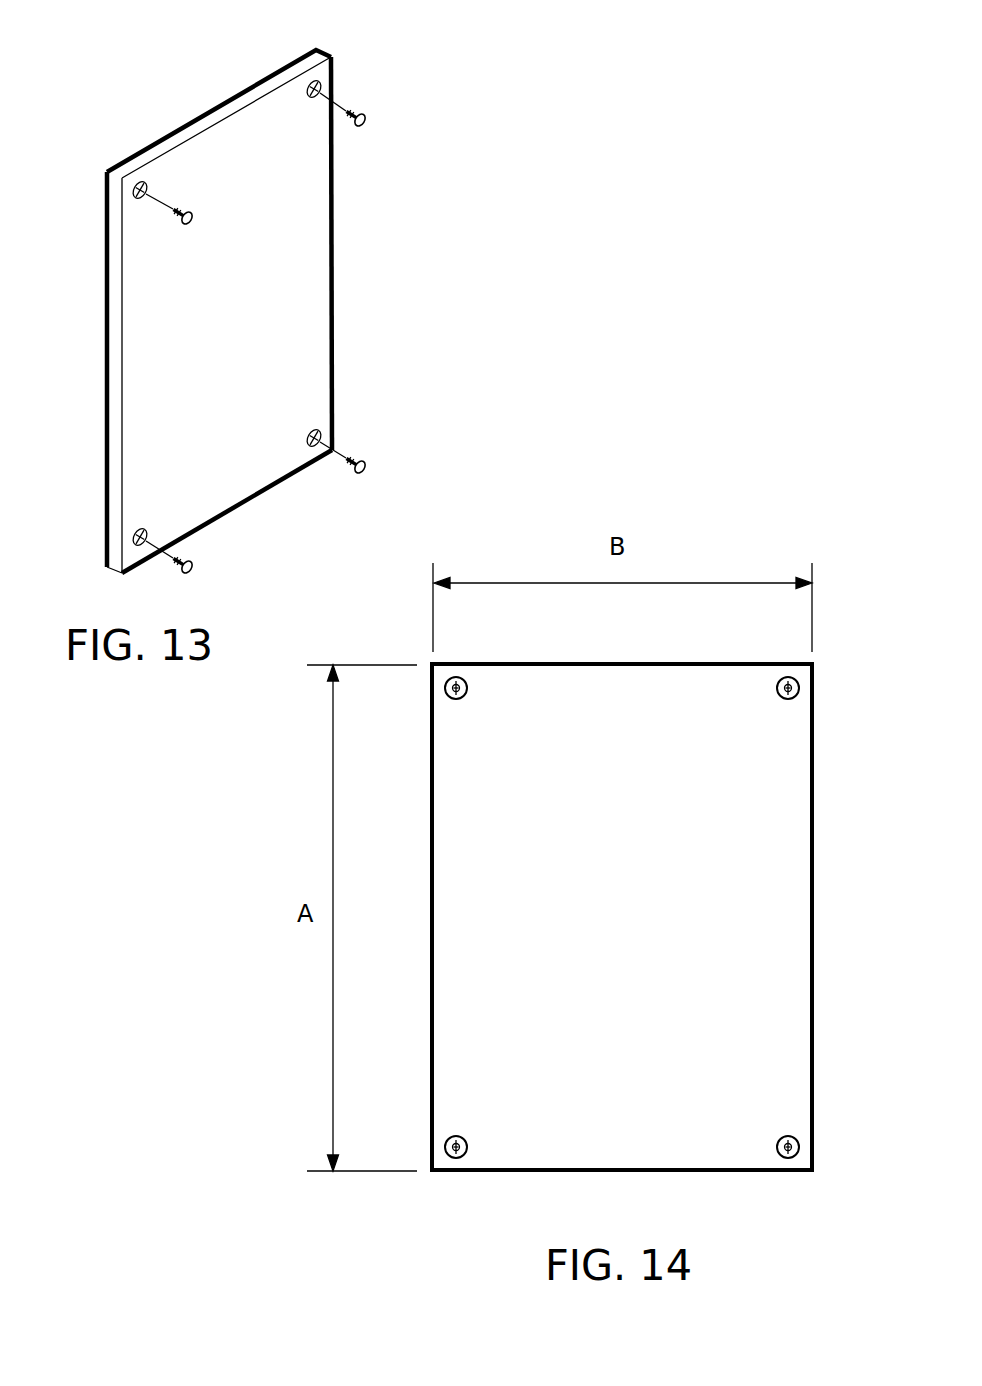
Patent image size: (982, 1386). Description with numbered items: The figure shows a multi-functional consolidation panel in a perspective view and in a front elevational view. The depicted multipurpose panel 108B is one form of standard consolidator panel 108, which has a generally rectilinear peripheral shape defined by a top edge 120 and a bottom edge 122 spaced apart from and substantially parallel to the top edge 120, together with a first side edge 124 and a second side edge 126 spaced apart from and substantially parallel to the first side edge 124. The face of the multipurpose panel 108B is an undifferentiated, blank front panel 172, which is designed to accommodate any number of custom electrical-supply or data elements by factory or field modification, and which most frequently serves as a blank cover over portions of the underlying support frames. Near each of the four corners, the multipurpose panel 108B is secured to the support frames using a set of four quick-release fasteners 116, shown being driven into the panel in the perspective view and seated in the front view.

In FIG. 13, the standard consolidator panel 108 is at (279, 321).
In FIG. 14, the standard consolidator panel 108 is at (613, 959).
In FIG. 13, the multipurpose panel 108B is at (279, 321).
In FIG. 14, the multipurpose panel 108B is at (613, 932).
In FIG. 13, the quick-release fastener 116 is at (375, 129).
In FIG. 13, the top edge 120 is at (320, 48).
In FIG. 14, the top edge 120 is at (585, 663).
In FIG. 13, the bottom edge 122 is at (240, 507).
In FIG. 14, the bottom edge 122 is at (585, 1172).
In FIG. 13, the first side edge 124 is at (106, 473).
In FIG. 14, the first side edge 124 is at (432, 1013).
In FIG. 13, the second side edge 126 is at (336, 225).
In FIG. 14, the second side edge 126 is at (814, 975).
In FIG. 13, the front panel 172 is at (245, 377).
In FIG. 14, the front panel 172 is at (648, 931).